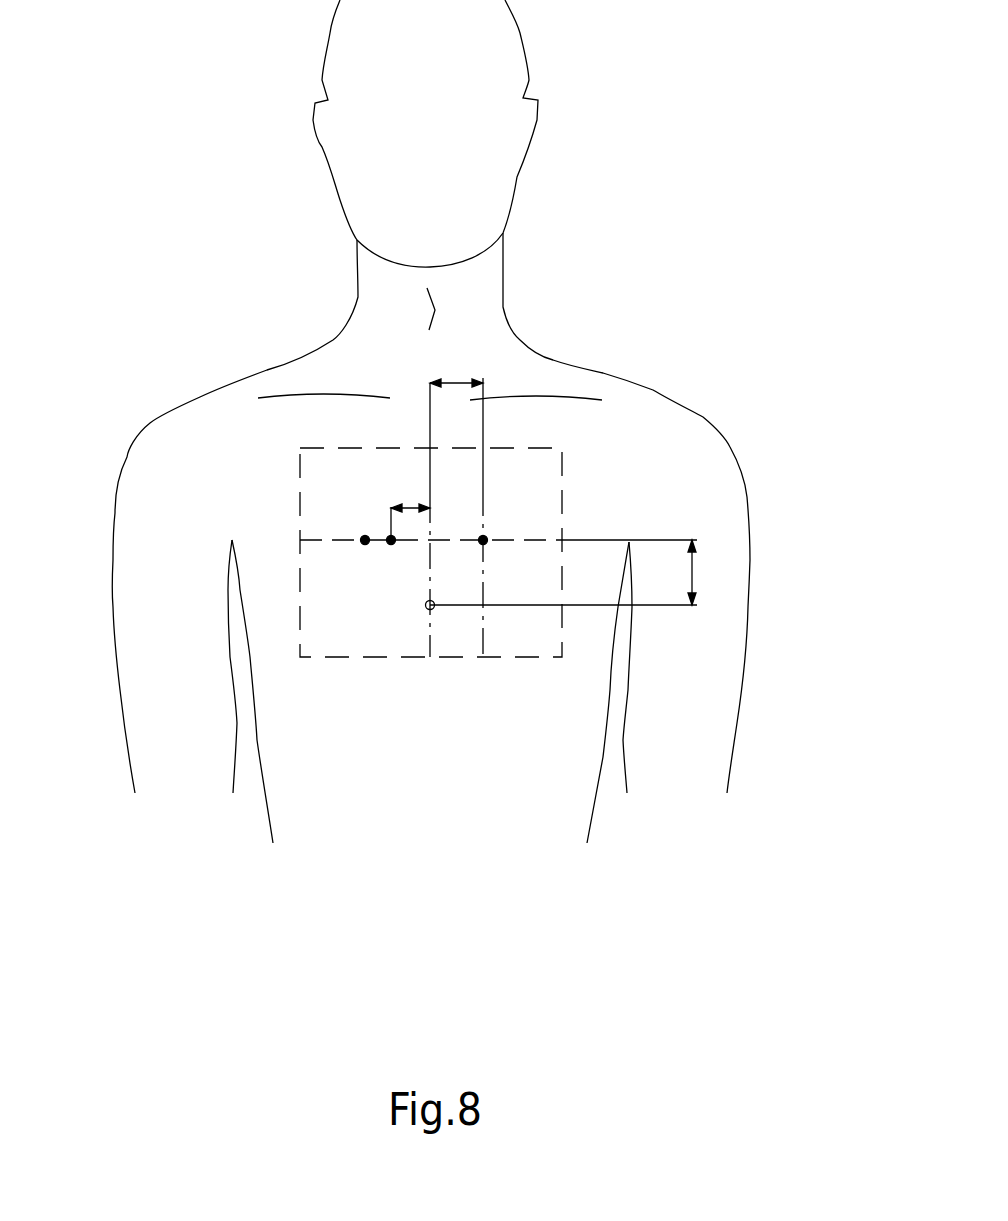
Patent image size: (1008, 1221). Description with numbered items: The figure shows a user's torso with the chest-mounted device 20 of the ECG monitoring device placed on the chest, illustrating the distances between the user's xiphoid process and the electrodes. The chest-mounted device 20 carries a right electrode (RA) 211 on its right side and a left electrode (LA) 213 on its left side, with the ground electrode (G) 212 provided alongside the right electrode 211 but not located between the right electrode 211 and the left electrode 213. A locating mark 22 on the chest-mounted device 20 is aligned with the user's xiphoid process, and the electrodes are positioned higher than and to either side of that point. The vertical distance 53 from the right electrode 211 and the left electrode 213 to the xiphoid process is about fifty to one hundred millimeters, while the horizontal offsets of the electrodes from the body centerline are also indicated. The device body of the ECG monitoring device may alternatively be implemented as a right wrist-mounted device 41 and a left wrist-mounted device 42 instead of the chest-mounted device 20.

The chest-mounted device 20 is at (508, 445).
The locating mark 22 is at (430, 610).
The right wrist-mounted device 41 is at (410, 505).
The left wrist-mounted device 42 is at (462, 378).
The vertical distance 53 is at (694, 573).
The right electrode (RA) 211 is at (391, 545).
The ground electrode (G) 212 is at (363, 538).
The left electrode (LA) 213 is at (486, 539).